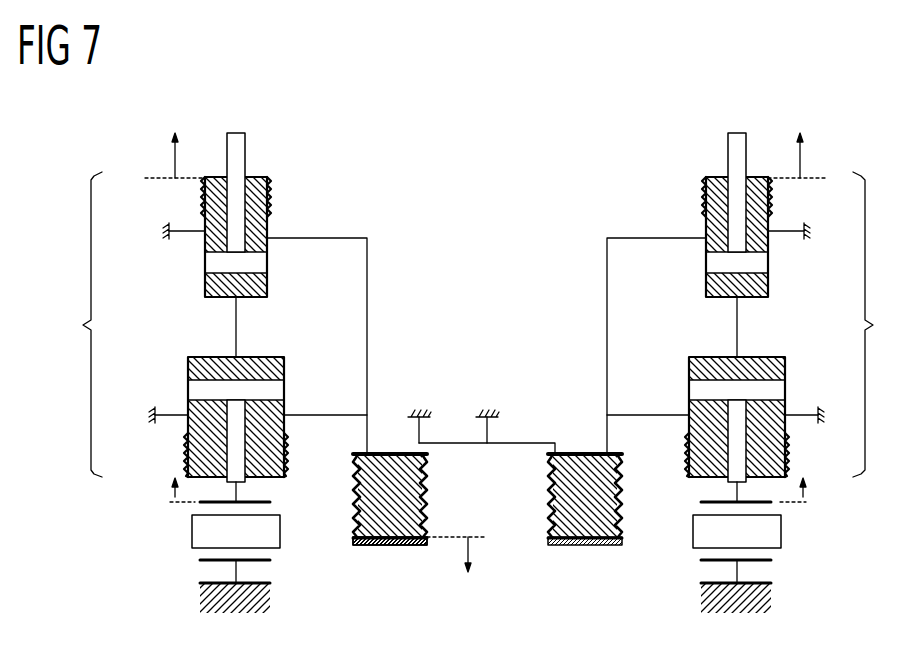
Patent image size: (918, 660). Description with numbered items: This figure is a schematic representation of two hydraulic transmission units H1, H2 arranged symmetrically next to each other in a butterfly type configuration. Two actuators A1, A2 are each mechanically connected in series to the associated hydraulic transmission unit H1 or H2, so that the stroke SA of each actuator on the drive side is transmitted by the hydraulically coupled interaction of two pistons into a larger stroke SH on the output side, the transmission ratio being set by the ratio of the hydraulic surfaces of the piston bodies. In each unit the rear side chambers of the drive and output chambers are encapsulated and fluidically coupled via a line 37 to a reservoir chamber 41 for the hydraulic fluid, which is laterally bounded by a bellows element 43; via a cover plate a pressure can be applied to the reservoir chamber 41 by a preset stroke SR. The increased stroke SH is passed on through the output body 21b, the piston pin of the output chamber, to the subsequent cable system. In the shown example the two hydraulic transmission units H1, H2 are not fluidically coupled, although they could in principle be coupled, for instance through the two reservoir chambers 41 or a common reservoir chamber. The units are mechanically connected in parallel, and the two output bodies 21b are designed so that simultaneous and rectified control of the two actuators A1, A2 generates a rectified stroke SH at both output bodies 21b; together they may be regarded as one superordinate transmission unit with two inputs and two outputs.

The output body 21b is at (240, 152).
The line 37 is at (370, 313).
The reservoir chamber 41 is at (383, 545).
The bellows element 43 is at (427, 497).
The actuator A1 is at (192, 538).
The actuator A2 is at (785, 538).
The hydraulic transmission unit H1 is at (74, 324).
The hydraulic transmission unit H2 is at (879, 324).
The stroke on the output side SH is at (487, 155).
The stroke of the drive side SA is at (489, 486).
The preset stroke SR is at (467, 559).